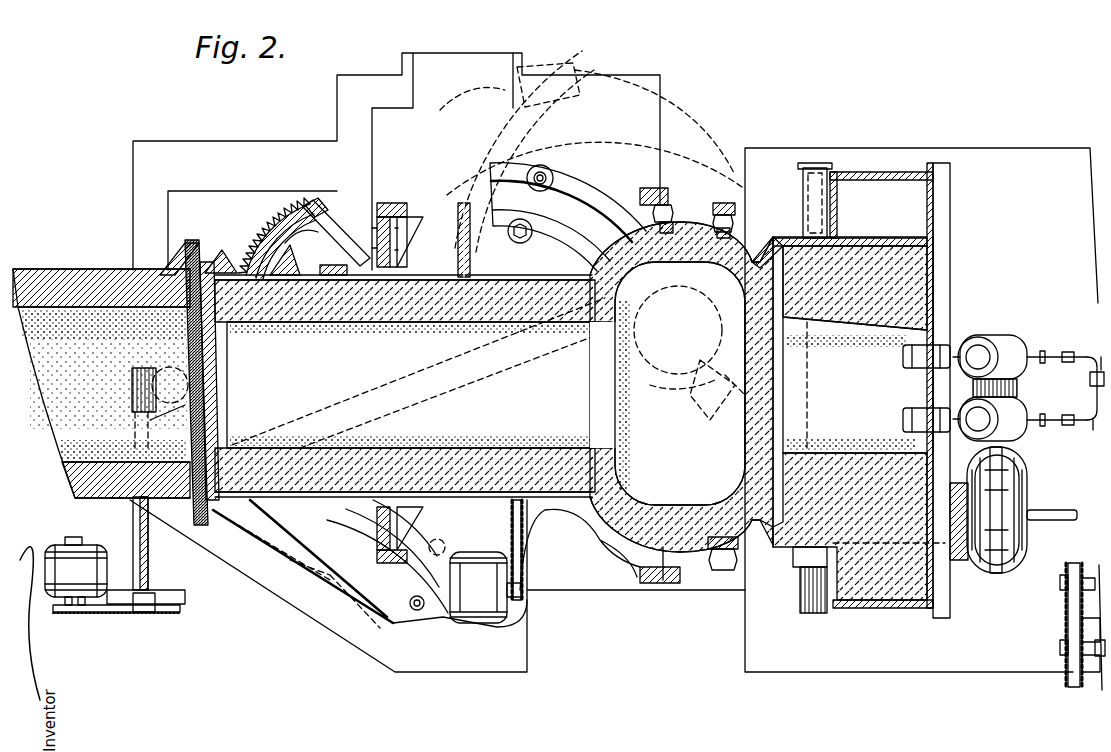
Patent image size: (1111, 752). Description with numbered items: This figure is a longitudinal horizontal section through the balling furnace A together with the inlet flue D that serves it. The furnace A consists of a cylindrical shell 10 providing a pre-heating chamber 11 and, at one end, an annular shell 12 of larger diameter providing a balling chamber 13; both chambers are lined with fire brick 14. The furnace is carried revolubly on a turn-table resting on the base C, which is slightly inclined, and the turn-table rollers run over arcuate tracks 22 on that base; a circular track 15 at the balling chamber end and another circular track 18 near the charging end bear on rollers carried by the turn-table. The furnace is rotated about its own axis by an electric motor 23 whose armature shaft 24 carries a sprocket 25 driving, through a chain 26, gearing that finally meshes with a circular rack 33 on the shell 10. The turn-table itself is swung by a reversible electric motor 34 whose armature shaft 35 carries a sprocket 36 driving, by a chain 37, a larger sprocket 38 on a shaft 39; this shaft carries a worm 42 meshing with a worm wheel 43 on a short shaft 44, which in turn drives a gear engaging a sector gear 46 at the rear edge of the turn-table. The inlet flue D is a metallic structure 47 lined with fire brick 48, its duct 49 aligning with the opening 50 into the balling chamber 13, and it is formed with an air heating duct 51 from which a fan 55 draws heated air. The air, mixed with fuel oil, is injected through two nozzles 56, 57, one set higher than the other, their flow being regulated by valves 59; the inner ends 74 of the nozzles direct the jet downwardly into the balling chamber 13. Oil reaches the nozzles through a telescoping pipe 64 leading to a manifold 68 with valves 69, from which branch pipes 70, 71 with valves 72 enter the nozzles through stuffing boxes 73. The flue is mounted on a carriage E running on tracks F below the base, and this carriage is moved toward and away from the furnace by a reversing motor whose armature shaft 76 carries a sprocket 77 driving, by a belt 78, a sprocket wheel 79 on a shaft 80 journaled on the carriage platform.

The cylindrical shell 10 is at (360, 270).
The pre-heating chamber 11 is at (413, 361).
The annular shell 12 is at (650, 180).
The balling chamber 13 is at (681, 387).
The fire brick 14 is at (395, 420).
The circular track 15 is at (672, 200).
The circular track 18 is at (328, 210).
The arcuate tracks 22 is at (573, 143).
The electric motor 23 is at (477, 623).
The armature shaft 24 is at (525, 590).
The sprocket 25 is at (524, 602).
The chain 26 is at (548, 553).
The circular rack 33 is at (407, 207).
The electric motor 34 is at (96, 545).
The armature shaft 35 is at (80, 606).
The sprocket 36 is at (66, 606).
The chain 37 is at (112, 612).
The sprocket 38 is at (153, 612).
The shaft 39 is at (150, 586).
The worm 42 is at (132, 392).
The worm wheel 43 is at (150, 425).
The short shaft 44 is at (135, 422).
The sector gear 46 is at (277, 212).
The metallic structure 47 is at (940, 252).
The fire brick 48 is at (880, 292).
The duct 49 is at (885, 337).
The opening 50 is at (757, 412).
The air heating duct 51 is at (860, 185).
The fan 55 is at (1028, 494).
The nozzle 56 is at (978, 412).
The nozzle 57 is at (985, 345).
The valves 59 is at (1025, 342).
The pipe 64 is at (1070, 415).
The manifold 68 is at (1088, 382).
The valves 69 is at (1080, 406).
The branch pipe 70 is at (1093, 426).
The branch pipe 71 is at (1072, 352).
The valves 72 is at (1045, 362).
The stuffing boxes 73 is at (1000, 347).
The inner ends of the nozzles 74 is at (903, 420).
The armature shaft 76 is at (1100, 575).
The sprocket 77 is at (1070, 566).
The belt 78 is at (1072, 682).
The sprocket wheel 79 is at (1064, 667).
The shaft 80 is at (1098, 674).
The balling furnace A is at (632, 185).
The base C is at (363, 136).
The inlet flue D is at (947, 296).
The carriage E is at (1060, 147).
The tracks F is at (28, 366).